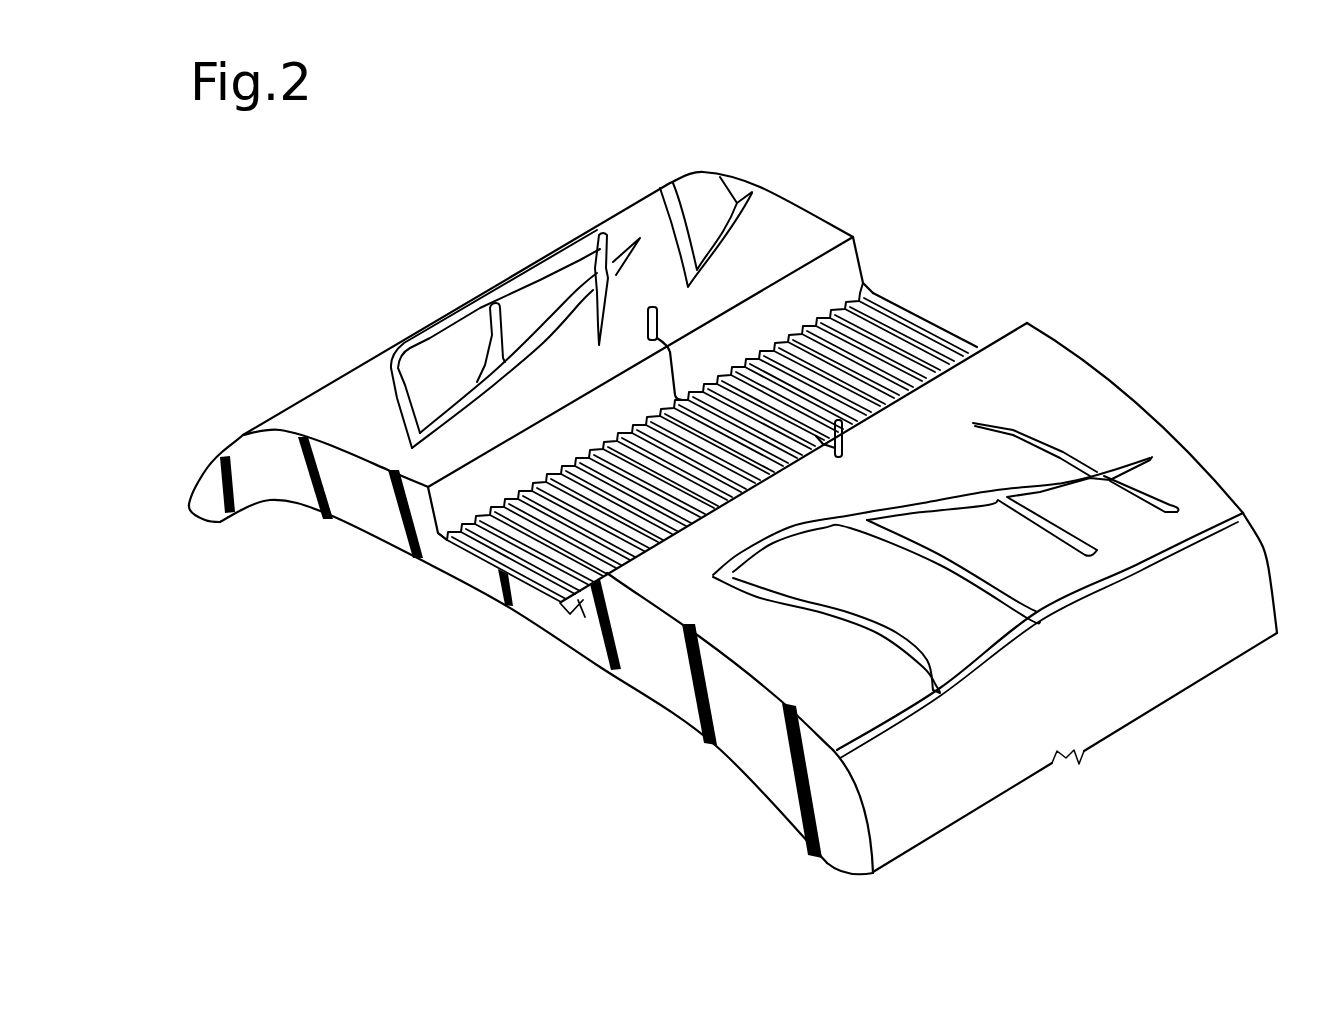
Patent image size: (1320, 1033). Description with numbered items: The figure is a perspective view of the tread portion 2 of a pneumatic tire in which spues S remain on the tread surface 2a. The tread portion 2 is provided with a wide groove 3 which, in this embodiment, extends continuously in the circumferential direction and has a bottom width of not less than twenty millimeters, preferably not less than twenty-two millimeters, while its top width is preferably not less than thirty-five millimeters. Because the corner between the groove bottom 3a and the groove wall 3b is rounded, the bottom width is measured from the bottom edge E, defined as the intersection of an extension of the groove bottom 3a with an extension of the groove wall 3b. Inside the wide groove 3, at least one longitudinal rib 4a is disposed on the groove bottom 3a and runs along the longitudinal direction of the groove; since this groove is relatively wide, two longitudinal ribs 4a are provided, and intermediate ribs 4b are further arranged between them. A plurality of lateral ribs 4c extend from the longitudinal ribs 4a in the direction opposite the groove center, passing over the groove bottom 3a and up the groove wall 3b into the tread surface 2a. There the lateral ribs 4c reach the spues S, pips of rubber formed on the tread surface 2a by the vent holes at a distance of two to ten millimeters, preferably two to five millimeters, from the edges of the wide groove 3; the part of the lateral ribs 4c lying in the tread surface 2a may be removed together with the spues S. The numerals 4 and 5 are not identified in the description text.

The tread portion 2 is at (785, 235).
The tread surface 2a is at (1075, 390).
The wide groove 3 is at (938, 295).
The groove bottom 3a is at (867, 292).
The groove wall 3b is at (853, 245).
The base body 4 is at (290, 610).
The longitudinal rib 4a is at (498, 503).
The intermediate rib 4b is at (537, 548).
The lateral rib 4c is at (670, 372).
The groove pattern 5 is at (555, 303).
The spue S is at (647, 307).
The bottom edge E is at (547, 467).